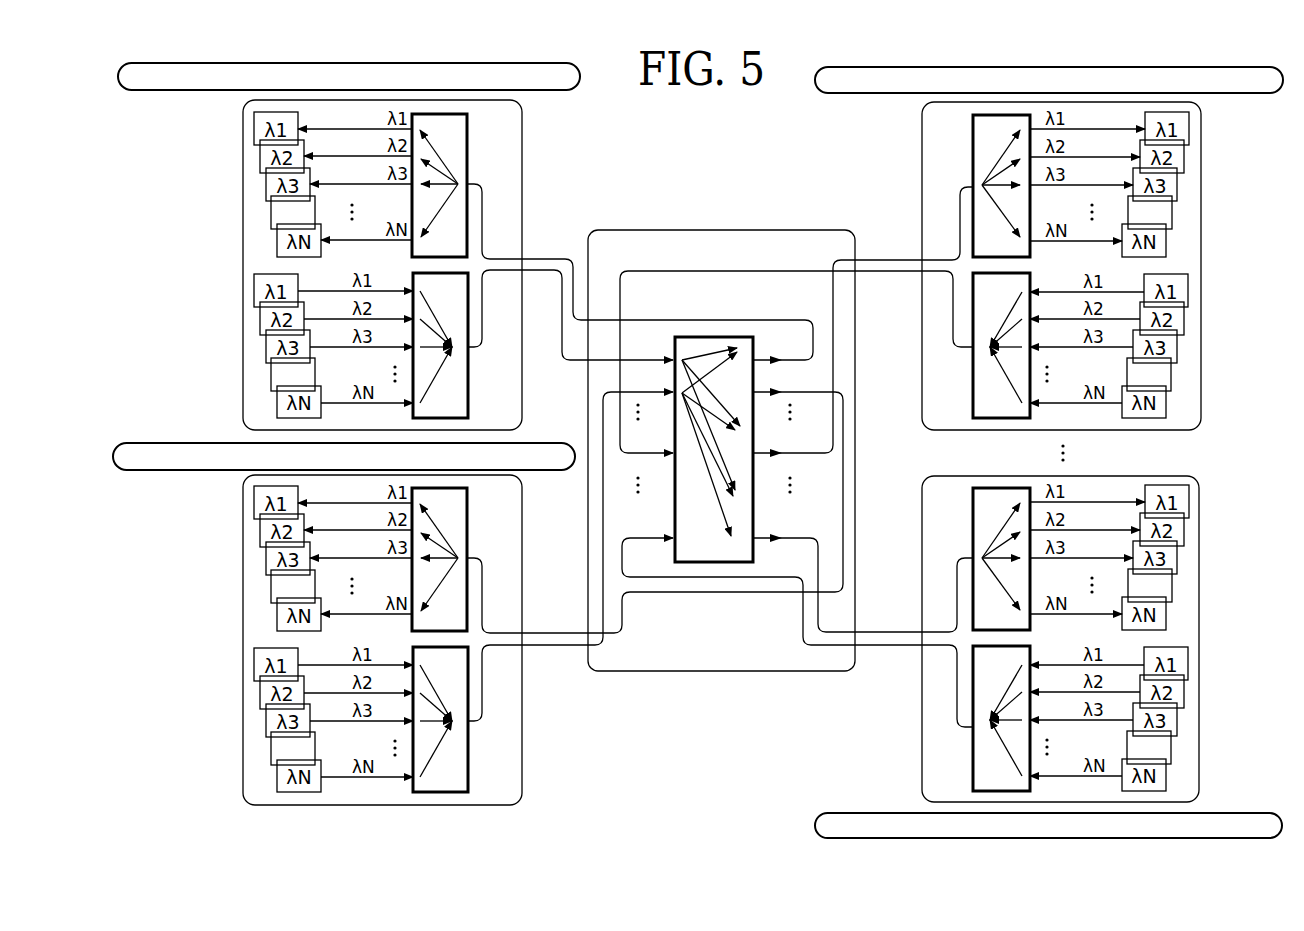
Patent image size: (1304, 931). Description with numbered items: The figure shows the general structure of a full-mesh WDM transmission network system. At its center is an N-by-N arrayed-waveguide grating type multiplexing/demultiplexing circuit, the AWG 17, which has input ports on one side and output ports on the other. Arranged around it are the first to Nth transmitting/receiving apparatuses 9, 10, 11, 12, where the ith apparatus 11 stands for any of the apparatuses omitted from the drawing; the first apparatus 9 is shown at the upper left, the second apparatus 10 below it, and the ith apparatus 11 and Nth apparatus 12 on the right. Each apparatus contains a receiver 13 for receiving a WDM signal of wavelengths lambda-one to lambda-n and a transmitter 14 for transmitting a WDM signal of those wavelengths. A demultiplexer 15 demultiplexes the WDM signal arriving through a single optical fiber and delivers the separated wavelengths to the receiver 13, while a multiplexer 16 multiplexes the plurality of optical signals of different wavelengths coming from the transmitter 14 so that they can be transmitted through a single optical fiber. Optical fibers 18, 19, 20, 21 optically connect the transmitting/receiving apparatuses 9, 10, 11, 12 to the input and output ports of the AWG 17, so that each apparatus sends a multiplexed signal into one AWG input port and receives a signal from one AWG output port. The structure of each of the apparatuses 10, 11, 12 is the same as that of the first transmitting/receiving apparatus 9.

The first transmitting/receiving apparatus 9 is at (522, 115).
The second transmitting/receiving apparatus 10 is at (523, 557).
The ith transmitting/receiving apparatus 11 is at (1202, 122).
The Nth transmitting/receiving apparatus 12 is at (920, 513).
The receiver 13 is at (243, 132).
The transmitter 14 is at (248, 293).
The demultiplexer 15 is at (467, 152).
The multiplexer 16 is at (468, 385).
The N×N arrayed-waveguide grating type multiplexing/demultiplexing circuit (AWG) 17 is at (712, 337).
The optical fiber 18 is at (533, 260).
The optical fiber 19 is at (552, 640).
The optical fiber 20 is at (893, 260).
The optical fiber 21 is at (888, 640).